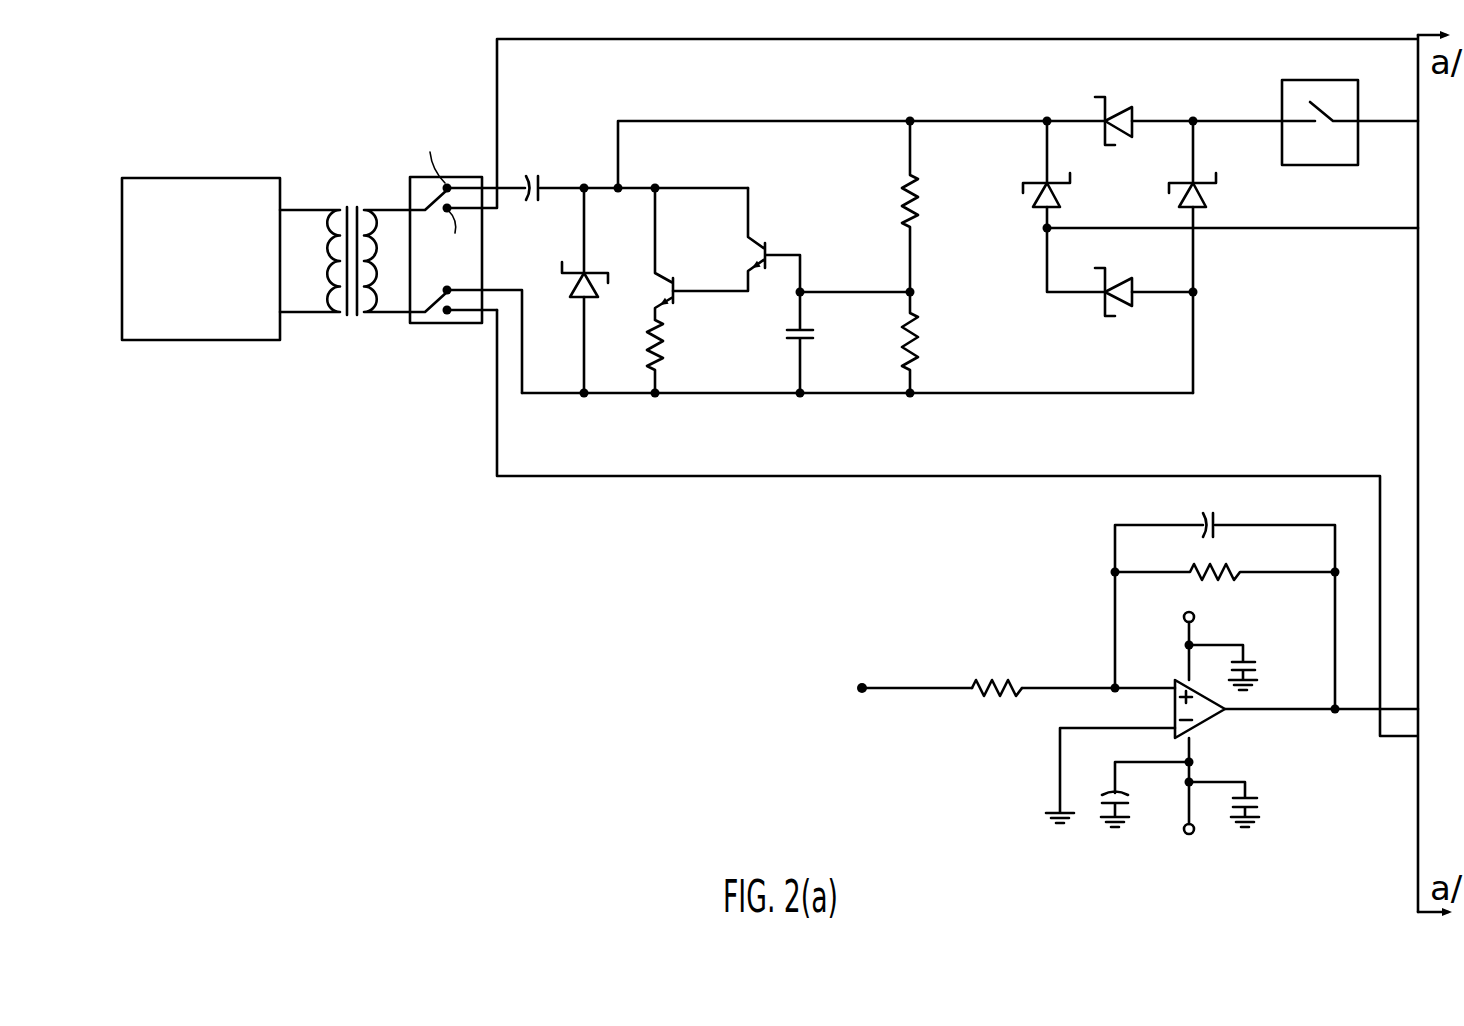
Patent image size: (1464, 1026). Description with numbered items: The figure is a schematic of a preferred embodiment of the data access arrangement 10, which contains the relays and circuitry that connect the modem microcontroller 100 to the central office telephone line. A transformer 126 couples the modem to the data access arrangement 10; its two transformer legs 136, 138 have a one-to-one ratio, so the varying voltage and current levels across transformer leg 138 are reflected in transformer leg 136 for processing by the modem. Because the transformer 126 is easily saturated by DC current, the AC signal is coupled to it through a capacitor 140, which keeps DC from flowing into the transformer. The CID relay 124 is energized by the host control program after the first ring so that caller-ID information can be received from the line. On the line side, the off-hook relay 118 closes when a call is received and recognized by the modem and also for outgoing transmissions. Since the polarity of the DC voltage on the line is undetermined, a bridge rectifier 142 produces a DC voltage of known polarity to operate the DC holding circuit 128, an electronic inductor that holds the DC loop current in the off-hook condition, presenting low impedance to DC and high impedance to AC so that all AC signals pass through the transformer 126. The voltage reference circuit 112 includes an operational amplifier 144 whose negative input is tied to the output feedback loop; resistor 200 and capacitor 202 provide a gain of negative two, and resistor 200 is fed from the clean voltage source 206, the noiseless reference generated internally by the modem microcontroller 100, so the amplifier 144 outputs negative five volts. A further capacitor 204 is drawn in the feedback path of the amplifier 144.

The data access arrangement 10 is at (418, 536).
The modem microcontroller 100 is at (205, 153).
The transformer 126 is at (345, 262).
The transformer leg 136 is at (330, 320).
The transformer leg 138 is at (373, 320).
The CID relay 124 is at (457, 357).
The capacitor 140 is at (532, 173).
The DC holding circuit 128 is at (918, 412).
The bridge rectifier 142 is at (1270, 278).
The off-hook relay 118 is at (1292, 77).
The voltage reference circuit 112 is at (1098, 696).
The operational amplifier 144 is at (1250, 717).
The resistor 200 is at (995, 672).
The capacitor 202 is at (1208, 565).
The feedback capacitor 204 is at (1207, 510).
The clean voltage source 206 is at (910, 695).